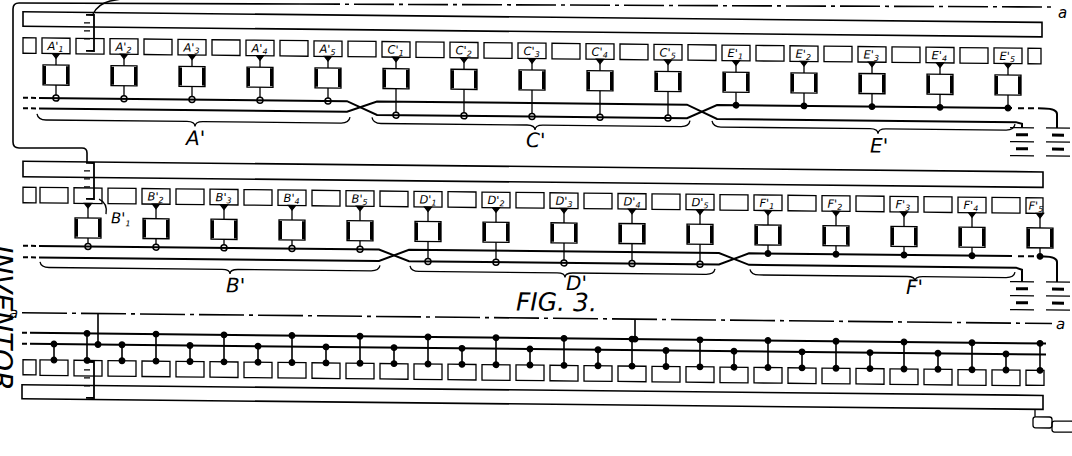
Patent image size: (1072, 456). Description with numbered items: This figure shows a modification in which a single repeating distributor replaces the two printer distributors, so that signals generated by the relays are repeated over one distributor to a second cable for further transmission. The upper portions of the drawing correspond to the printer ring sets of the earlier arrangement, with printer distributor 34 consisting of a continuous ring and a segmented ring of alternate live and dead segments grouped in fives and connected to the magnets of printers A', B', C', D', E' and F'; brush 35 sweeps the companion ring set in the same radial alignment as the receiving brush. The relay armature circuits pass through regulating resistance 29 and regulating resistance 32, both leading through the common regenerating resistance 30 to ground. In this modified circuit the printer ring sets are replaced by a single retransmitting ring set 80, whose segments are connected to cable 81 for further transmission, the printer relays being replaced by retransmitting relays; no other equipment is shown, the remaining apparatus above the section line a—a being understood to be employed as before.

The regulating resistance 29 is at (1028, 32).
The regenerating resistance 30 is at (1026, 182).
The regulating resistance 32 is at (96, 171).
The printer distributor 34 is at (1042, 128).
The brush 35 is at (1042, 277).
The retransmitting ring set 80 is at (1040, 377).
The cable 81 is at (1032, 411).